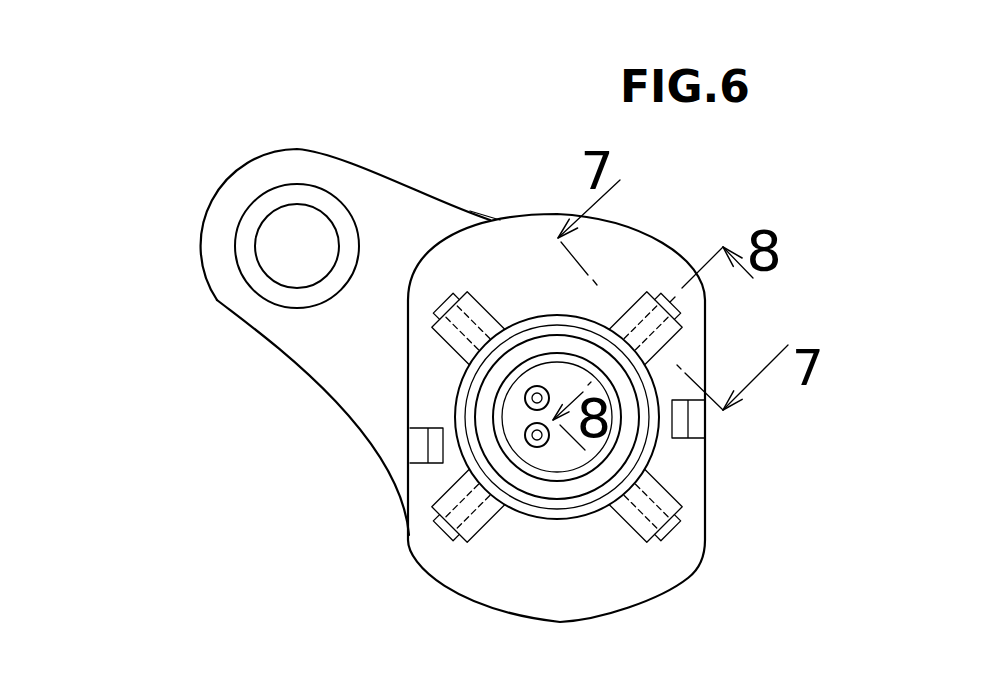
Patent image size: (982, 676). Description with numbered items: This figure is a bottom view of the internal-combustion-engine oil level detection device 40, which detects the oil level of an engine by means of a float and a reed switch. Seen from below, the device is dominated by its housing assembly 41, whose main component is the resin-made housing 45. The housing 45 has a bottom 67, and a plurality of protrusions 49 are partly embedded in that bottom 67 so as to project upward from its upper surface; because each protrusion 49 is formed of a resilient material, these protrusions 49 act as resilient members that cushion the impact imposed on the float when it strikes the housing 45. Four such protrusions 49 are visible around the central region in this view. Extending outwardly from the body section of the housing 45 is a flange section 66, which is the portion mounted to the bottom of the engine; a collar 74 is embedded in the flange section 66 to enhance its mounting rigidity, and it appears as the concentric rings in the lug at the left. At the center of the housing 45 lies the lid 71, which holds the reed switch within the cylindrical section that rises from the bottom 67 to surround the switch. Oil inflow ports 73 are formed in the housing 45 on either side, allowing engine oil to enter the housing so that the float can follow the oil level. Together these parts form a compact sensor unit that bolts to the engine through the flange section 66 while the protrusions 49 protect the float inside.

The oil level detection device 40 is at (267, 87).
The housing assembly 41 is at (545, 162).
The housing 45 is at (520, 190).
The protrusions 49 is at (640, 306).
The flange section 66 is at (215, 237).
The bottom 67 is at (504, 247).
The lid 71 is at (561, 383).
The oil inflow ports 73 is at (430, 452).
The collar 74 is at (270, 288).